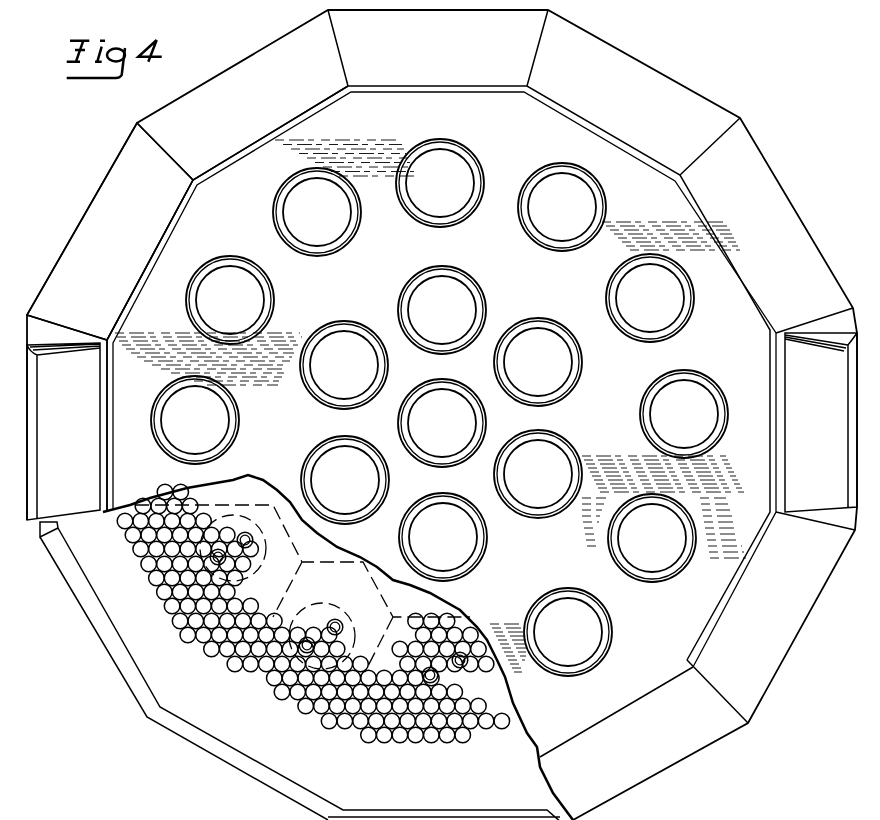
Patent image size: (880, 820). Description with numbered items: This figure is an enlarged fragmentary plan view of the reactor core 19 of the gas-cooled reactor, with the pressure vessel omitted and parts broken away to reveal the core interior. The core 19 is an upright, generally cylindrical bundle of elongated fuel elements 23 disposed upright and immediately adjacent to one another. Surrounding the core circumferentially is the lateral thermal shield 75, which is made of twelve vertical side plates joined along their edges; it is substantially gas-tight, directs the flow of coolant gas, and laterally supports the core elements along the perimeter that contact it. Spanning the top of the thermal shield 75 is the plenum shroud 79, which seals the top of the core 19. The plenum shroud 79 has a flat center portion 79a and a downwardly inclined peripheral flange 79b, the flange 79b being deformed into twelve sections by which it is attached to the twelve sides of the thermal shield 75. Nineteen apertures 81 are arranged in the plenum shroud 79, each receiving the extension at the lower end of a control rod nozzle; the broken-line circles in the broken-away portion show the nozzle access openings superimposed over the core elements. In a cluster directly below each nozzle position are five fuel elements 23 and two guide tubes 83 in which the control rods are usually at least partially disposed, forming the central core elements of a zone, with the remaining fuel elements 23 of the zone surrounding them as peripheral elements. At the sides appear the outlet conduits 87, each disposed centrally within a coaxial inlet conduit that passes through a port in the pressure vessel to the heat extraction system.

The reactor core 19 is at (468, 740).
The fuel elements 23 is at (262, 660).
The lateral thermal shield 75 is at (98, 626).
The plenum shroud 79 is at (292, 431).
The flat center portion 79a is at (207, 227).
The downwardly inclined peripheral flange 79b is at (143, 155).
The aperture 81 is at (202, 295).
The guide tubes 83 is at (334, 619).
The outlet conduit 87 is at (80, 414).